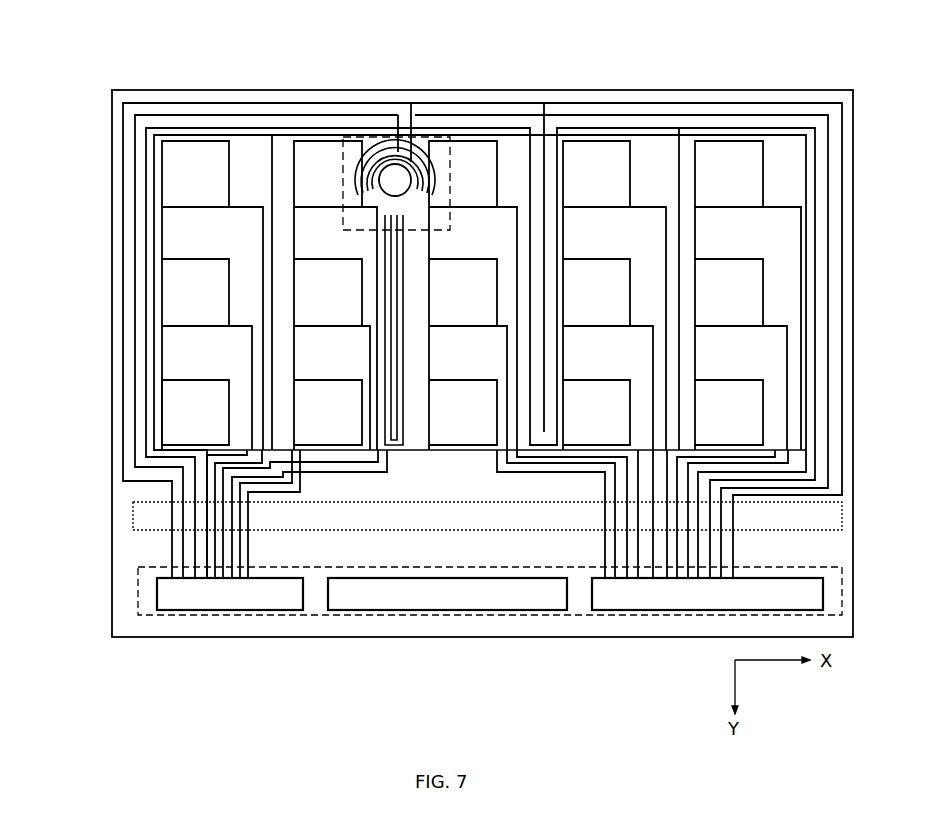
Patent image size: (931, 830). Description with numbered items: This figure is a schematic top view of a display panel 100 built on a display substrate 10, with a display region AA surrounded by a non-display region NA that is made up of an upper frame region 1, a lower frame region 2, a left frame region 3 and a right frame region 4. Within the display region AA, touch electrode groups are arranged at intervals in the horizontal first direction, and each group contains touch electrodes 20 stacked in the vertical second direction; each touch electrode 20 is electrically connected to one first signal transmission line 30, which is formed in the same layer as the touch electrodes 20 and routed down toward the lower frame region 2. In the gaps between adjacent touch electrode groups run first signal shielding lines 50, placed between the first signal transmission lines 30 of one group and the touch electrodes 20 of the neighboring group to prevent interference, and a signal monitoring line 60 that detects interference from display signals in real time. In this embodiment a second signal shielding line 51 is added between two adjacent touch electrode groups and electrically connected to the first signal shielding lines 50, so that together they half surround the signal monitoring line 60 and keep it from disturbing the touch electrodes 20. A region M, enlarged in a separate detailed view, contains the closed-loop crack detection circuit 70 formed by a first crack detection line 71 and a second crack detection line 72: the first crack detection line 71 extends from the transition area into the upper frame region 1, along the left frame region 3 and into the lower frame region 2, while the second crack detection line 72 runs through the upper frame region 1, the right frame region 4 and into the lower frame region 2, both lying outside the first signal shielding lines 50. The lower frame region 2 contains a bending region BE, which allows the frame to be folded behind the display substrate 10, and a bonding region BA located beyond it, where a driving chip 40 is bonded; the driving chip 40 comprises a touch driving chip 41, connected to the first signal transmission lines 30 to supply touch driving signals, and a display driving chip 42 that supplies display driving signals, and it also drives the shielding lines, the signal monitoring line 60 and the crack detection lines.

The display panel 100 is at (216, 38).
The lower frame region 2 is at (478, 626).
The right frame region 4 is at (847, 146).
The display substrate 10 is at (462, 90).
The upper frame region 1 is at (732, 114).
The left frame region 3 is at (120, 346).
The second signal shielding line 51 is at (529, 160).
The first signal transmission line 30 is at (244, 195).
The touch electrode 20 is at (183, 418).
The display region AA is at (180, 242).
The first signal shielding line 50 is at (598, 118).
The signal monitoring line 60 is at (680, 104).
The non-display region NA is at (130, 297).
The bending region BE is at (167, 520).
The bonding region BA is at (150, 608).
The driving chip 40 is at (387, 667).
The touch driving chip 41 is at (207, 595).
The display driving chip 42 is at (357, 595).
The region M is at (349, 178).
The crack detection circuit 70 is at (455, 48).
The first crack detection line 71 is at (345, 94).
The second crack detection line 72 is at (425, 94).